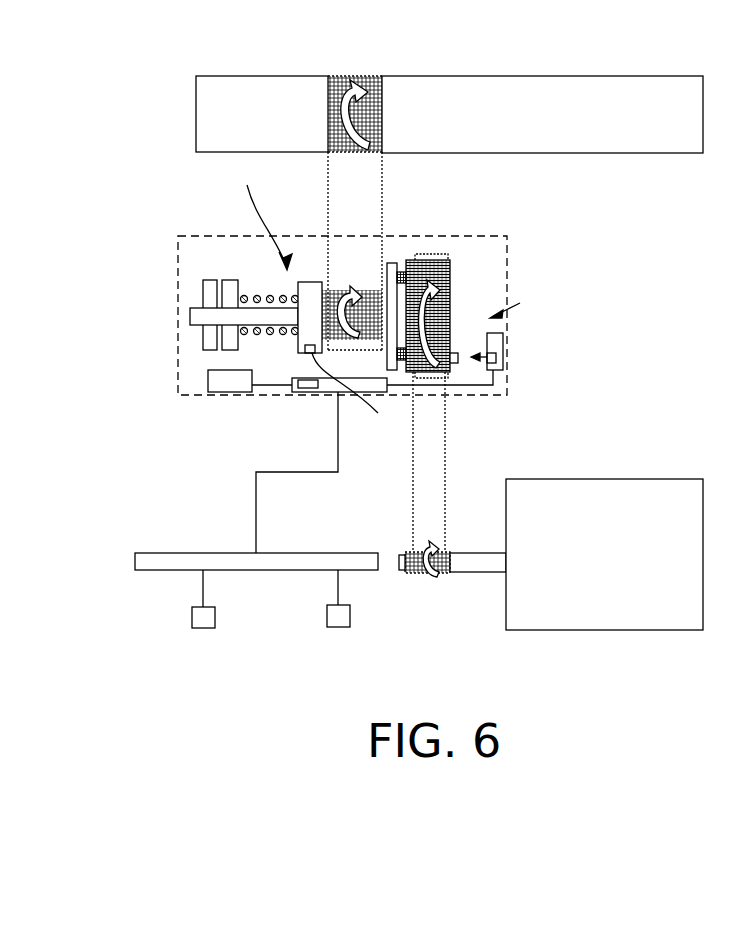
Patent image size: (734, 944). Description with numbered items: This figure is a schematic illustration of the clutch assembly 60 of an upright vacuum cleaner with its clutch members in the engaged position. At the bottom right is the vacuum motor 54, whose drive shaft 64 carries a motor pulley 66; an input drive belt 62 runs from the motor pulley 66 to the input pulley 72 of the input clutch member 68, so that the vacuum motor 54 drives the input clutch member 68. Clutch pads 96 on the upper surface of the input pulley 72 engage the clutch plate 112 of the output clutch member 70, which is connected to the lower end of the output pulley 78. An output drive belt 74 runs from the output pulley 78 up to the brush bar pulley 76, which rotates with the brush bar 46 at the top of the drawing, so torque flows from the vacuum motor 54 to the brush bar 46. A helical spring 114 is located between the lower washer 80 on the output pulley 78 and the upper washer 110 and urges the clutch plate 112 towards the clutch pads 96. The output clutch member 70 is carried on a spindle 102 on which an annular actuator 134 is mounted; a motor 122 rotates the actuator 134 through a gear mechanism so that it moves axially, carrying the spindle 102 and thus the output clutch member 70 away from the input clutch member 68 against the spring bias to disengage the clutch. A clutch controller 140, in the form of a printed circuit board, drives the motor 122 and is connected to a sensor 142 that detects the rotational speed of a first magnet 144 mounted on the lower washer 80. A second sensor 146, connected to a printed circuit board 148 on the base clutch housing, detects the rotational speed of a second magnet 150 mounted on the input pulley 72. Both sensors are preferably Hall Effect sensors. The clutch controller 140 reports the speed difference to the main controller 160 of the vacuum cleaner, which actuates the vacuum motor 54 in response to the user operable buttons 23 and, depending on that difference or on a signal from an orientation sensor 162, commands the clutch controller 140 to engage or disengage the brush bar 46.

The brush bar 46 is at (517, 88).
The brush bar pulley 76 is at (372, 82).
The output drive belt 74 is at (382, 165).
The output clutch member 70 is at (264, 216).
The clutch assembly 60 is at (508, 262).
The actuator 134 is at (202, 297).
The upper washer 110 is at (238, 280).
The spindle 102 is at (190, 314).
The helical spring 114 is at (257, 297).
The output pulley 78 is at (323, 280).
The lower washer 80 is at (298, 343).
The clutch plate 112 is at (392, 262).
The clutch pads 96 is at (415, 254).
The input pulley 72 is at (450, 270).
The input clutch member 68 is at (520, 303).
The printed circuit board 148 is at (503, 343).
The second sensor 146 is at (495, 357).
The second magnet 150 is at (455, 353).
The motor 122 is at (230, 392).
The clutch controller 140 is at (330, 393).
The sensor 142 is at (307, 388).
The first magnet 144 is at (354, 400).
The main controller 160 is at (317, 553).
The user operable buttons 23 is at (203, 628).
The sensor 162 is at (338, 627).
The input drive belt 62 is at (433, 450).
The drive shaft 64 is at (488, 562).
The motor pulley 66 is at (410, 573).
The vacuum motor 54 is at (603, 479).